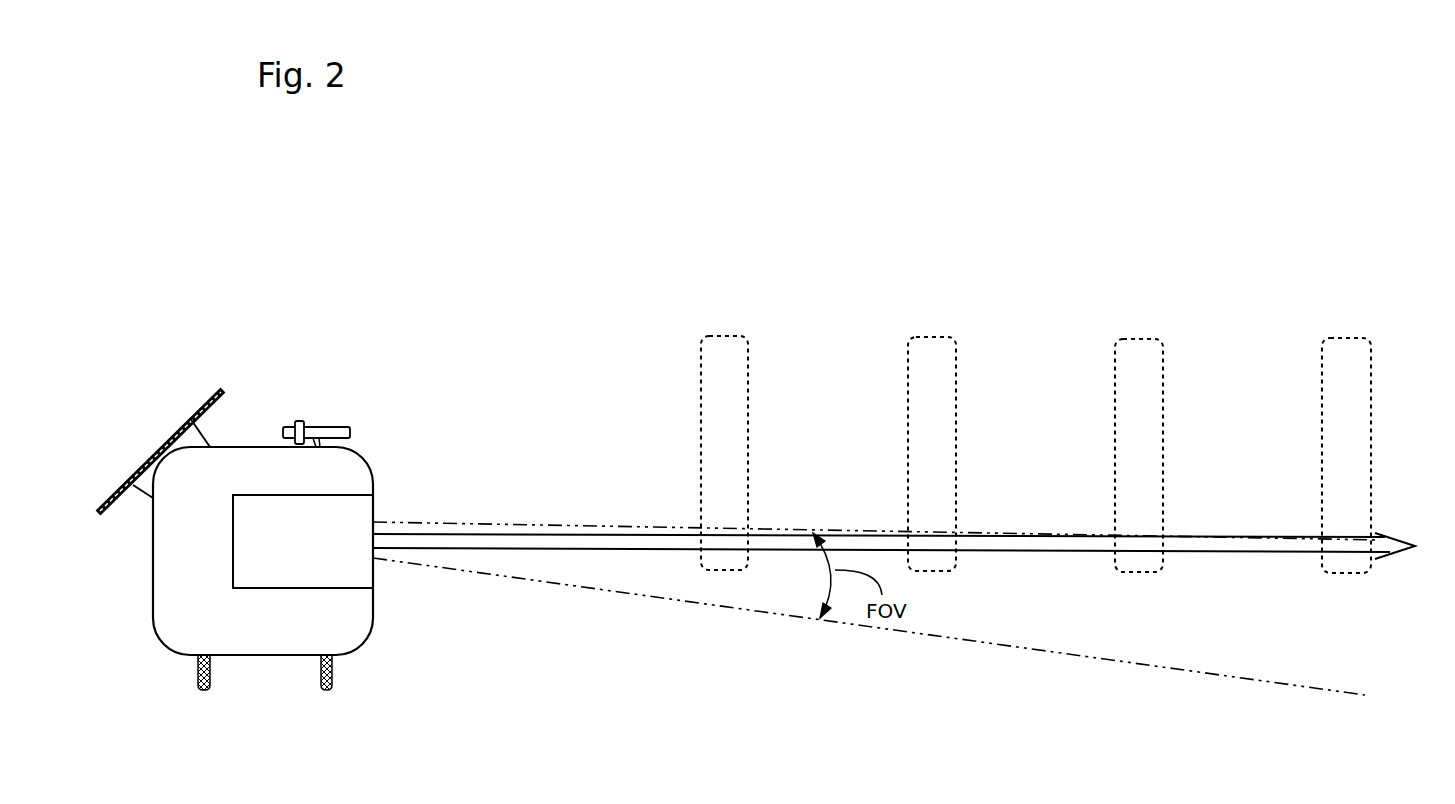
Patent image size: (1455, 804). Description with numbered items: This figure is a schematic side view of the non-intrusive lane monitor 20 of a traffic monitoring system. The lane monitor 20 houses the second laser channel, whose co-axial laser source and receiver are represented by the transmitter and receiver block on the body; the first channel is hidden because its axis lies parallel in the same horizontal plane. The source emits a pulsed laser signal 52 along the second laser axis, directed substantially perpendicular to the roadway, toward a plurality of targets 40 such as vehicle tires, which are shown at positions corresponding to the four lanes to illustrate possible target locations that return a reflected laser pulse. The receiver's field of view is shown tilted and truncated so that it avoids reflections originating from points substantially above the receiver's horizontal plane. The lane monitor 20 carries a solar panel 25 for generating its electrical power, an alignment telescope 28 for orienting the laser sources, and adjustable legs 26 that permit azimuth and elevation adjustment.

The lane monitor 20 is at (262, 657).
The solar panel 25 is at (192, 418).
The adjustable legs 26 is at (333, 683).
The alignment telescope 28 is at (318, 425).
The target 40 is at (750, 395).
The pulsed laser signal 52 is at (507, 533).